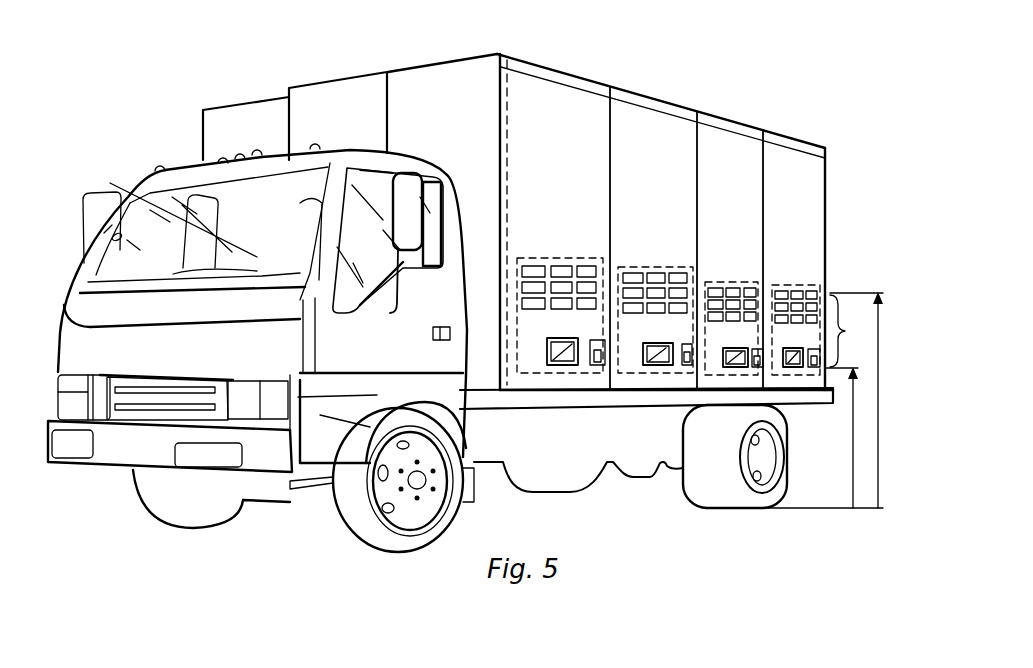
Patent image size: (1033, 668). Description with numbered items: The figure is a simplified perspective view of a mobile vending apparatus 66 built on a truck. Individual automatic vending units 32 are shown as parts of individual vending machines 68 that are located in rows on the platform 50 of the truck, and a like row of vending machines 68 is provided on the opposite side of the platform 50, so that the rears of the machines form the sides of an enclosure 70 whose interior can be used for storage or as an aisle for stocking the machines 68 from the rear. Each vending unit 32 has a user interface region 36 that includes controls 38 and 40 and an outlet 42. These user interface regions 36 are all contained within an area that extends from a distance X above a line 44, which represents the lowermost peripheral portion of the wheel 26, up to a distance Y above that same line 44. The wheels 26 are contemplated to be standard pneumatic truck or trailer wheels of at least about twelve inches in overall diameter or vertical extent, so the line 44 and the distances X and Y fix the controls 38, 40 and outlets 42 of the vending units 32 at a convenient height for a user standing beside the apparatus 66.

The wheel 26 is at (690, 493).
The automatic vending unit 32 is at (541, 245).
The user interface region 36 is at (849, 331).
The controls 38 is at (587, 263).
The controls 40 is at (530, 308).
The outlet 42 is at (562, 365).
The line 44 is at (825, 484).
The platform 50 is at (564, 412).
The mobile vending apparatus 66 is at (790, 113).
The vending machine 68 is at (228, 103).
The enclosure 70 is at (351, 72).
The distance X is at (855, 478).
The distance Y is at (878, 435).